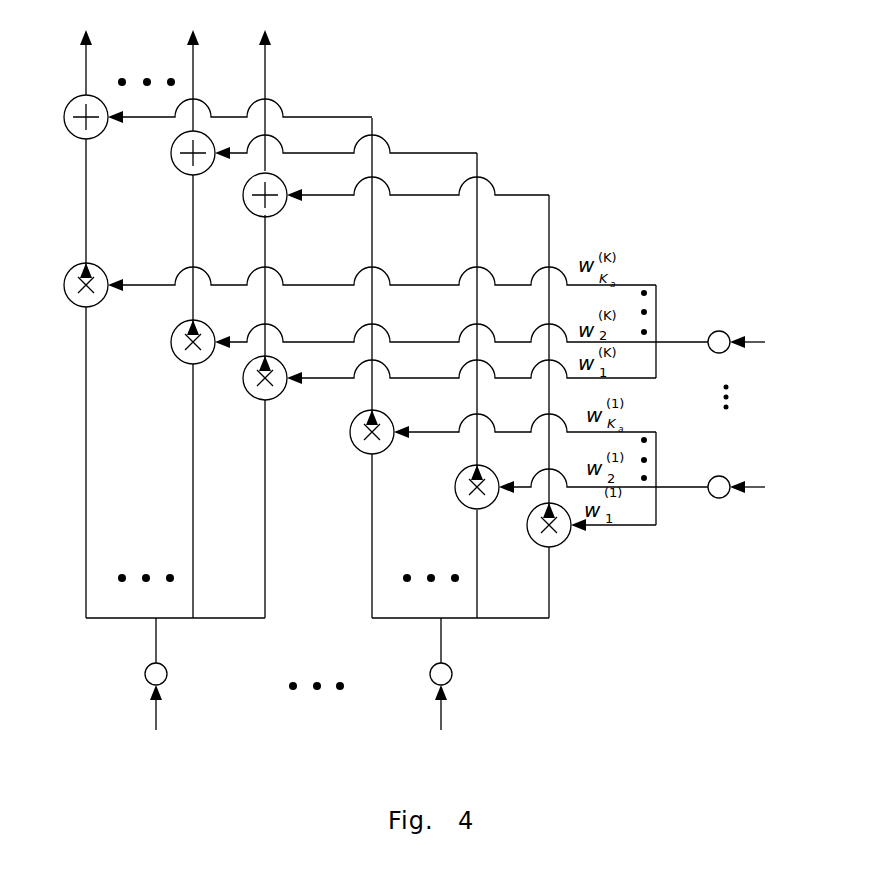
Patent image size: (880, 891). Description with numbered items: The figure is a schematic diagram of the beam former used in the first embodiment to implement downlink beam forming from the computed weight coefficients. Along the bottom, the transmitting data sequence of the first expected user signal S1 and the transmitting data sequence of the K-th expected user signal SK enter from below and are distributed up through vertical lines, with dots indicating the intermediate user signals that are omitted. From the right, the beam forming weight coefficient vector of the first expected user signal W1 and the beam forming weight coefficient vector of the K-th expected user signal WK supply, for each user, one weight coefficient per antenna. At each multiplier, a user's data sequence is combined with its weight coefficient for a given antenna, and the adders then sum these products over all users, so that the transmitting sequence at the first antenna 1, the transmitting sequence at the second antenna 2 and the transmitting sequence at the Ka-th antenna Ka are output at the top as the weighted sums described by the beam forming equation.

The transmitting sequence at the Ka-th antenna Ka is at (96, 160).
The transmitting sequence at the second antenna 2 is at (203, 189).
The transmitting sequence at the first antenna 1 is at (275, 207).
The beam forming weight coefficient vector of the K-th expected user signal WK is at (736, 319).
The beam forming weight coefficient vector of the first expected user signal W1 is at (736, 468).
The transmitting data sequence of the K-th expected user signal SK is at (174, 674).
The transmitting data sequence of the first expected user signal S1 is at (457, 674).